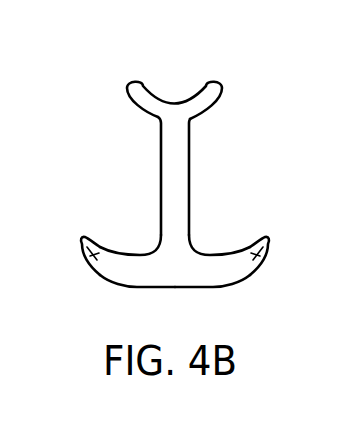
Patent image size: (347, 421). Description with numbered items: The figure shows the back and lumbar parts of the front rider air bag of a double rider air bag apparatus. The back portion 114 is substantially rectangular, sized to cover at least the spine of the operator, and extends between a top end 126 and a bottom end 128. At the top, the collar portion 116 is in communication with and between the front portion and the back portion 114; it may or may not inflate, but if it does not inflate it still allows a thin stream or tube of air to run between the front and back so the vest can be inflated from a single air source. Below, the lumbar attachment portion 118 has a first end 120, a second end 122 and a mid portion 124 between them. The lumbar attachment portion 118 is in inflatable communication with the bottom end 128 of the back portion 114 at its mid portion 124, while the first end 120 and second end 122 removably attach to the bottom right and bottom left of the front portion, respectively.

The back portion 114 is at (236, 161).
The collar portion 116 is at (193, 100).
The lumbar attachment portion 118 is at (243, 270).
The first end 120 is at (93, 258).
The second end 122 is at (273, 253).
The mid portion 124 is at (172, 270).
The top end 126 is at (172, 131).
The bottom end 128 is at (198, 253).